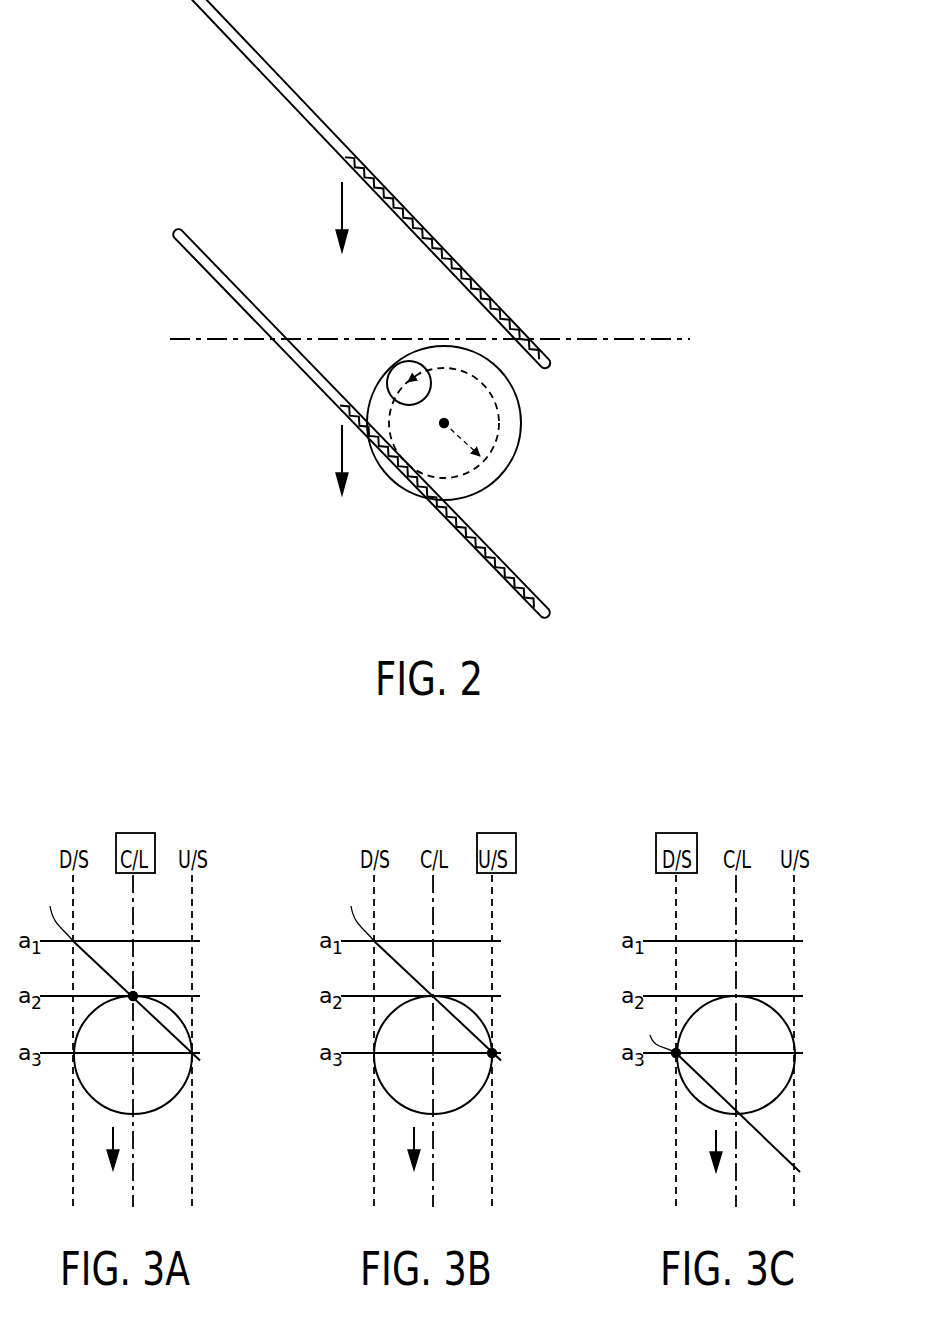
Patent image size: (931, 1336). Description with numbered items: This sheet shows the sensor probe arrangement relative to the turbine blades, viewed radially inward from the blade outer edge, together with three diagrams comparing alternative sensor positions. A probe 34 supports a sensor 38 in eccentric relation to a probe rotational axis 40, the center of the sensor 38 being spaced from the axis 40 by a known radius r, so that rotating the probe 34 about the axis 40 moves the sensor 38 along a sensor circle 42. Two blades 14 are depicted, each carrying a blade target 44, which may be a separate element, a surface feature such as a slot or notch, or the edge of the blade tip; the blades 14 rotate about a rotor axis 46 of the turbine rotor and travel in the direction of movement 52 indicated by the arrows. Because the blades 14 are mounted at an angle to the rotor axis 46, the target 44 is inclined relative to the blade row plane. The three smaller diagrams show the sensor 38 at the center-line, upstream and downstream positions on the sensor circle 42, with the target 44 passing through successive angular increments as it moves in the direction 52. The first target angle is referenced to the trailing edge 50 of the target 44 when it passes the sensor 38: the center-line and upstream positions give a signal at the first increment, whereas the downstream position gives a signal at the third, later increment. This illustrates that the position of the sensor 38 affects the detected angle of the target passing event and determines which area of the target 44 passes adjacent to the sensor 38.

In FIG. 2, the blades 14 is at (257, 54).
In FIG. 2, the probe 34 is at (518, 450).
In FIG. 2, the sensor 38 is at (396, 363).
In FIG. 3A, the sensor 38 is at (137, 993).
In FIG. 3B, the sensor 38 is at (496, 1049).
In FIG. 3C, the sensor 38 is at (672, 1058).
In FIG. 2, the probe rotational axis 40 is at (450, 423).
In FIG. 3A, the probe rotational axis 40 is at (134, 1055).
In FIG. 3B, the probe rotational axis 40 is at (434, 1055).
In FIG. 3C, the probe rotational axis 40 is at (737, 1057).
In FIG. 2, the sensor circle 42 is at (497, 403).
In FIG. 3A, the sensor circle 42 is at (180, 1090).
In FIG. 3B, the sensor circle 42 is at (481, 1090).
In FIG. 3C, the sensor circle 42 is at (782, 1090).
In FIG. 2, the blade target 44 is at (377, 173).
In FIG. 3A, the blade target 44 is at (92, 958).
In FIG. 3B, the blade target 44 is at (393, 958).
In FIG. 3C, the blade target 44 is at (775, 1153).
In FIG. 2, the rotor axis 46 is at (618, 333).
In FIG. 3A, the trailing edge 50 is at (55, 910).
In FIG. 3B, the trailing edge 50 is at (356, 910).
In FIG. 3C, the trailing edge 50 is at (658, 1031).
In FIG. 2, the direction of movement 52 is at (338, 202).
In FIG. 3A, the direction of movement 52 is at (110, 1144).
In FIG. 3B, the direction of movement 52 is at (411, 1144).
In FIG. 3C, the direction of movement 52 is at (712, 1147).